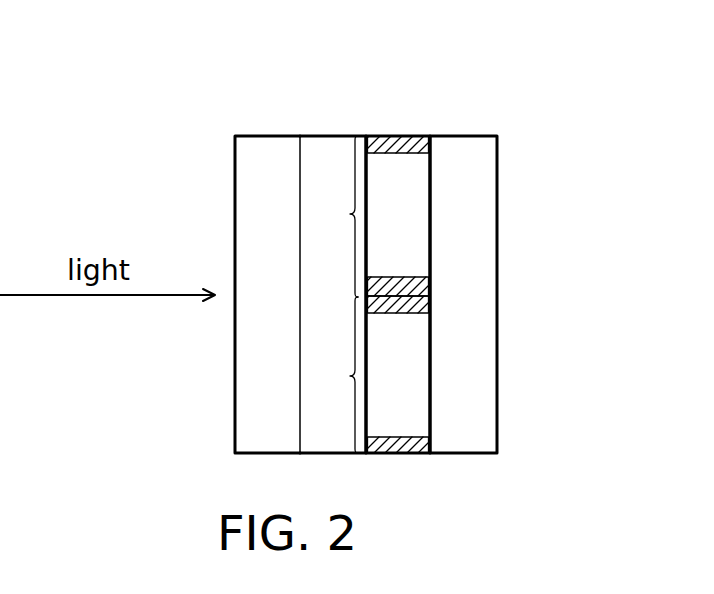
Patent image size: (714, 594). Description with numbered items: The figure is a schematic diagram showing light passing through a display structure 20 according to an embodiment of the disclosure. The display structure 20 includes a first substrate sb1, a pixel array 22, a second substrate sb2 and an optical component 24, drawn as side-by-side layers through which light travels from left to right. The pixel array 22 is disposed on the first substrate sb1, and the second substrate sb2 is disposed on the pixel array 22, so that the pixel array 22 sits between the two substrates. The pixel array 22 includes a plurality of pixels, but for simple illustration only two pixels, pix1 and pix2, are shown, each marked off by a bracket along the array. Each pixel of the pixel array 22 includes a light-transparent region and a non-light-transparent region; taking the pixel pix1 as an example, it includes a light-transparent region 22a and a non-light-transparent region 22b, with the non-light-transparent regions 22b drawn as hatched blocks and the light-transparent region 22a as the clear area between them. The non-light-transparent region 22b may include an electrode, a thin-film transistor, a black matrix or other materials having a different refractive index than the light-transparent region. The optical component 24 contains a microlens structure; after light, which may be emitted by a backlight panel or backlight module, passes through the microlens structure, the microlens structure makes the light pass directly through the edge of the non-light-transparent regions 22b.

The display structure 20 is at (369, 267).
The pixel array 22 is at (469, 257).
The light-transparent region 22a is at (422, 217).
The non-light-transparent region 22b is at (428, 143).
The optical component 24 is at (265, 134).
The first substrate sb1 is at (461, 134).
The second substrate sb2 is at (330, 134).
The pixel pix1 is at (350, 214).
The pixel pix2 is at (350, 376).